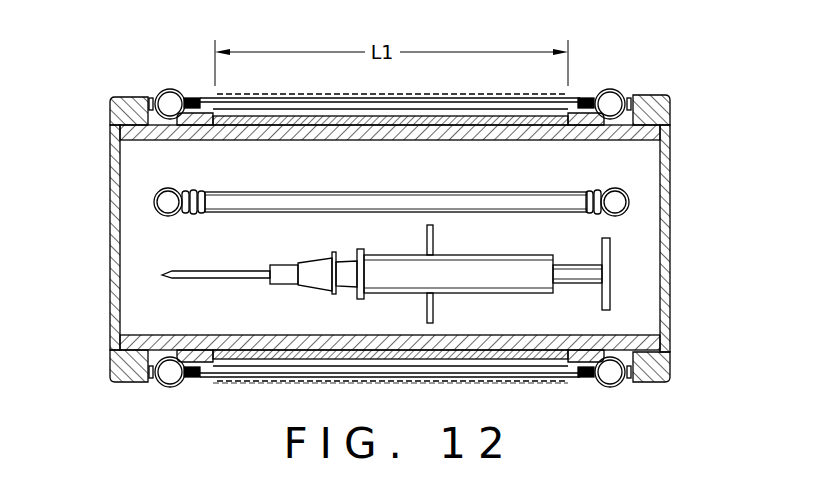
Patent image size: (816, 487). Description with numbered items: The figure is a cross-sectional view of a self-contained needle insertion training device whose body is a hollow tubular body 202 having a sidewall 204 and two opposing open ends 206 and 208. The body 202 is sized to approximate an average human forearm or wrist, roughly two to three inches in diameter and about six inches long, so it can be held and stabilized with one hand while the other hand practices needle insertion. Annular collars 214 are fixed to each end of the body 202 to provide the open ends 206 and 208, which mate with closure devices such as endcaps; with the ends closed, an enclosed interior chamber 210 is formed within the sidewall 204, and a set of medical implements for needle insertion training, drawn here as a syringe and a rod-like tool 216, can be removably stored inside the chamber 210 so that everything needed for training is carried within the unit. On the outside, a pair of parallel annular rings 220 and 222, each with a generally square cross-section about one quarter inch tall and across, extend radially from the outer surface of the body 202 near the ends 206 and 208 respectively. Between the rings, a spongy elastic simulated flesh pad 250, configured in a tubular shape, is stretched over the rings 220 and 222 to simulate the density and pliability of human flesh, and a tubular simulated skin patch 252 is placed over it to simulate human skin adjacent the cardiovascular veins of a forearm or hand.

The hollow tubular body 202 is at (272, 384).
The sidewall 204 is at (465, 142).
The open end 206 is at (650, 296).
The open end 208 is at (140, 162).
The interior chamber 210 is at (486, 322).
The annular collar 214 is at (143, 342).
The medical instruments 216 is at (160, 289).
The annular ring 220 is at (592, 382).
The annular ring 222 is at (200, 383).
The simulated flesh pad 250 is at (435, 120).
The simulated skin patch 252 is at (357, 385).